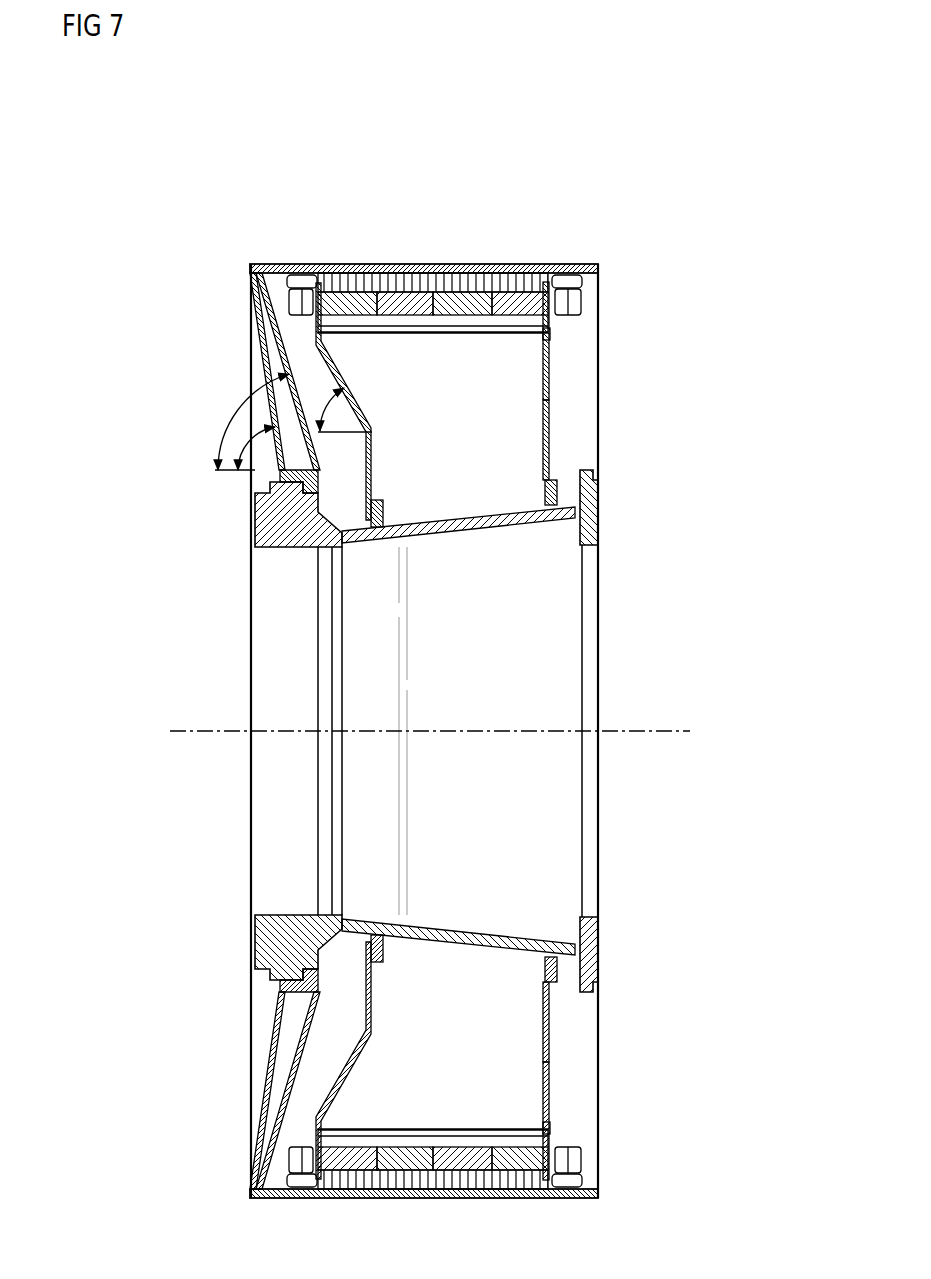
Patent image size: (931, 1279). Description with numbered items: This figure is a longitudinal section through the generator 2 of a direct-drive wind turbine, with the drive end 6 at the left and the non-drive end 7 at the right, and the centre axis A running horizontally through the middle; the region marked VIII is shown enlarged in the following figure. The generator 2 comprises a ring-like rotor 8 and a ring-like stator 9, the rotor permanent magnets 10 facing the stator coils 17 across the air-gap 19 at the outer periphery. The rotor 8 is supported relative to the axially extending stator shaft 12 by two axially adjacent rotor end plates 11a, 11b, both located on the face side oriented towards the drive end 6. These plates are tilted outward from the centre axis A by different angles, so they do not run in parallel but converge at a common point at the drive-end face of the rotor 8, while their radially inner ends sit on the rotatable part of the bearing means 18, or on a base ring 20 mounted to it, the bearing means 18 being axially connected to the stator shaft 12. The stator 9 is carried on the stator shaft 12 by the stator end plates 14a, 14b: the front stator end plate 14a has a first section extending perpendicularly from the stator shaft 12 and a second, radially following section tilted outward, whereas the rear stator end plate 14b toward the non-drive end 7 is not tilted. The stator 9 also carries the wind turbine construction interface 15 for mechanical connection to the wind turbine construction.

The generator 2 is at (300, 197).
The drive end 6 is at (100, 571).
The non-drive end 7 is at (804, 571).
The rotor 8 is at (583, 266).
The stator 9 is at (554, 380).
The rotor permanent magnets 10 is at (412, 270).
The front rotor end plate 11a is at (267, 374).
The rotor end plate 11b is at (277, 343).
The stator shaft 12 is at (492, 535).
The stator end plate 14a is at (373, 460).
The stator end plate 14b is at (553, 428).
The wind turbine construction interface 15 is at (598, 504).
The stator coils 17 is at (586, 300).
The bearing means 18 is at (292, 530).
The air-gap 19 is at (474, 273).
The base ring 20 is at (290, 471).
The centre axis A is at (630, 729).
The detail of FIG. 8 VIII is at (548, 133).